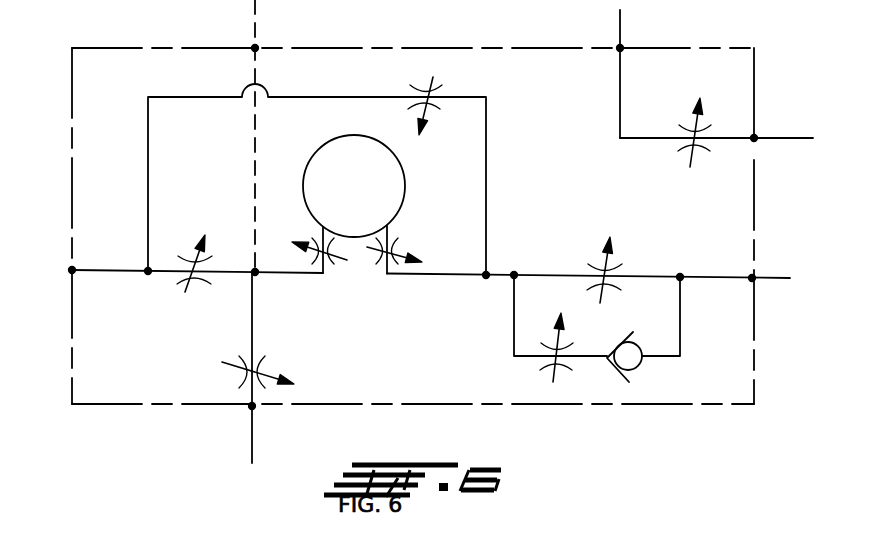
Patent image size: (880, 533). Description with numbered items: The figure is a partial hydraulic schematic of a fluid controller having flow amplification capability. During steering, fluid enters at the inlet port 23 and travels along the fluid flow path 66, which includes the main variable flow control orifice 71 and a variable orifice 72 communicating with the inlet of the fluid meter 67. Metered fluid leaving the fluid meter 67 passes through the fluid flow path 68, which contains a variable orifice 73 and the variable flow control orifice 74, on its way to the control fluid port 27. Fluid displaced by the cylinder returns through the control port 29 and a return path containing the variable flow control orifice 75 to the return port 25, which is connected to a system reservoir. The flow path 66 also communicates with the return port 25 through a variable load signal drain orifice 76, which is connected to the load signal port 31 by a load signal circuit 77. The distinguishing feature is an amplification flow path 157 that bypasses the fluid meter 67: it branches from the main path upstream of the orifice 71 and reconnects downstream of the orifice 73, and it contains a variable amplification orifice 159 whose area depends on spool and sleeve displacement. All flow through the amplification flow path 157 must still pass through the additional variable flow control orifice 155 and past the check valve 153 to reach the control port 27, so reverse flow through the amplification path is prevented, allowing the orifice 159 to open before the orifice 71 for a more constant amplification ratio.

The inlet port 23 is at (73, 270).
The return port 25 is at (621, 48).
The control fluid port 27 is at (752, 277).
The control port 29 is at (755, 137).
The load signal port 31 is at (257, 46).
The fluid flow path 66 is at (291, 274).
The fluid meter 67 is at (330, 138).
The fluid flow path 68 is at (414, 276).
The main variable flow control orifice 71 is at (198, 287).
The variable orifice 72 is at (340, 259).
The variable orifice 73 is at (395, 240).
The variable flow control orifice 74 is at (590, 268).
The variable flow control orifice 75 is at (713, 142).
The variable load signal drain orifice 76 is at (232, 366).
The load signal circuit 77 is at (250, 178).
The check valve 153 is at (643, 367).
The additional variable flow control orifice 155 is at (556, 368).
The amplification flow path 157 is at (150, 150).
The variable amplification orifice 159 is at (440, 93).